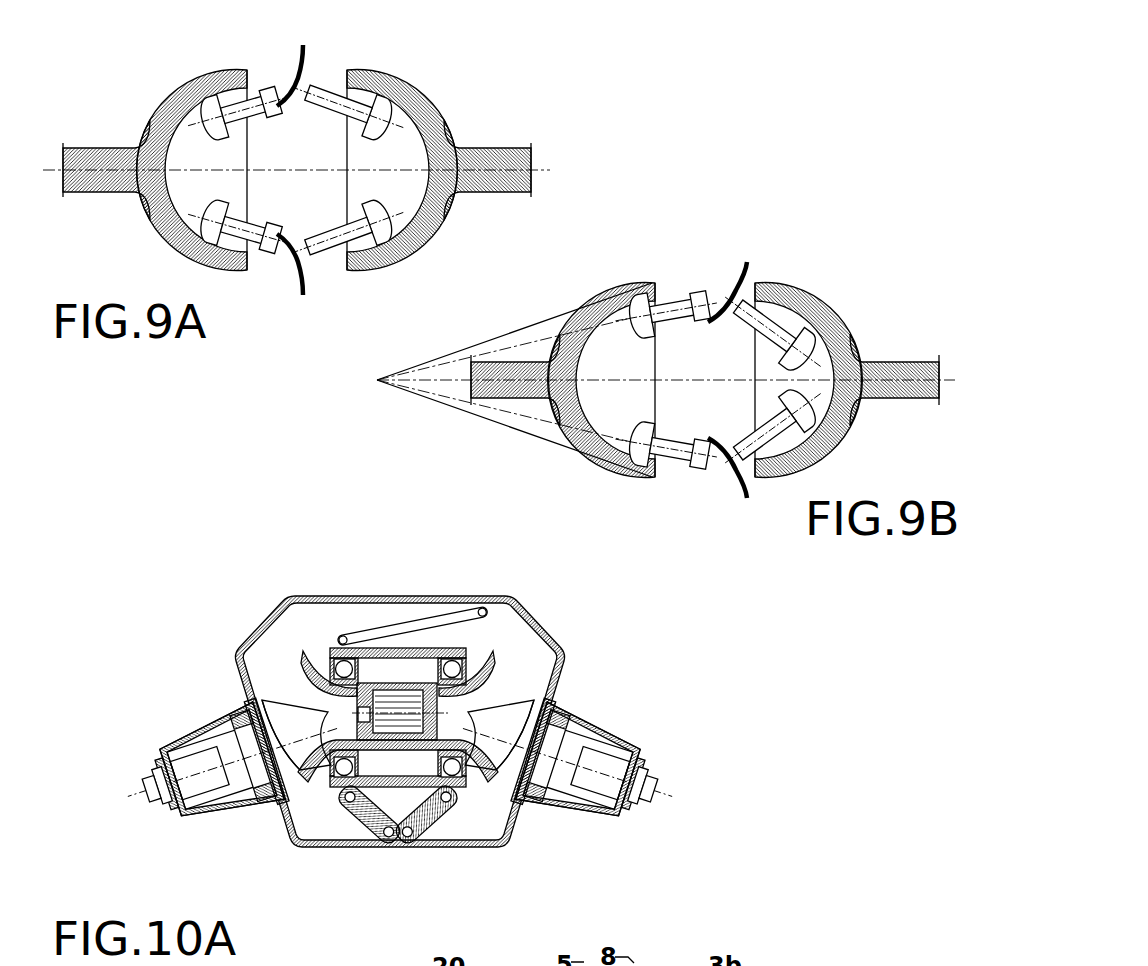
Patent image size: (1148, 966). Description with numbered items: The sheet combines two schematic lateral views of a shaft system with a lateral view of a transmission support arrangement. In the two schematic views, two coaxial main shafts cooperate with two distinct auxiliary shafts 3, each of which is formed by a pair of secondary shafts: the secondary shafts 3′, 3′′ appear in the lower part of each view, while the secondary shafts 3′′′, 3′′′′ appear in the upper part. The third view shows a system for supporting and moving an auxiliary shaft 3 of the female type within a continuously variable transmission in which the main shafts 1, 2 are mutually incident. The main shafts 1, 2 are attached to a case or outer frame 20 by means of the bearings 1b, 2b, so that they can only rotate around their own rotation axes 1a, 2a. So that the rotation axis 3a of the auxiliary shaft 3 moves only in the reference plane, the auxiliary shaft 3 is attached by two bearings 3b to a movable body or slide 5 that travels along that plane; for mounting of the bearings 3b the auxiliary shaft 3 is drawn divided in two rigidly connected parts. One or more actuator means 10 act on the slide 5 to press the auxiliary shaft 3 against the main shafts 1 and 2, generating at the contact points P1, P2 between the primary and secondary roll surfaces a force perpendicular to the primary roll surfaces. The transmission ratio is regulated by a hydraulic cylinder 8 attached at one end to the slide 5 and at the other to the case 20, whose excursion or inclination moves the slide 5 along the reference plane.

In FIG. 9A, the secondary shaft 3′ is at (258, 213).
In FIG. 9B, the secondary shaft 3′ is at (673, 469).
In FIG. 9A, the secondary shaft 3′′ is at (329, 262).
In FIG. 9B, the secondary shaft 3′′ is at (759, 427).
In FIG. 9A, the secondary shaft 3′′′ is at (258, 113).
In FIG. 9B, the secondary shaft 3′′′ is at (684, 327).
In FIG. 9A, the secondary shaft 3′′′′ is at (331, 82).
In FIG. 9B, the secondary shaft 3′′′′ is at (776, 311).
In FIG. 10A, the case 20 is at (311, 594).
In FIG. 10A, the auxiliary shaft 3 is at (395, 684).
In FIG. 10A, the rotation axis of the auxiliary shaft 3a is at (476, 712).
In FIG. 10A, the bearings 3b is at (332, 658).
In FIG. 10A, the hydraulic cylinder 8 is at (408, 618).
In FIG. 10A, the slide 5 is at (413, 647).
In FIG. 10A, the actuator means 10 is at (363, 829).
In FIG. 10A, the contact point P1 is at (312, 747).
In FIG. 10A, the contact point P2 is at (488, 750).
In FIG. 10A, the main shaft 1 is at (216, 748).
In FIG. 10A, the rotation axis 1a is at (141, 801).
In FIG. 10A, the bearing 1b is at (240, 803).
In FIG. 10A, the main shaft 2 is at (566, 785).
In FIG. 10A, the rotation axis 2a is at (662, 792).
In FIG. 10A, the bearing 2b is at (560, 717).